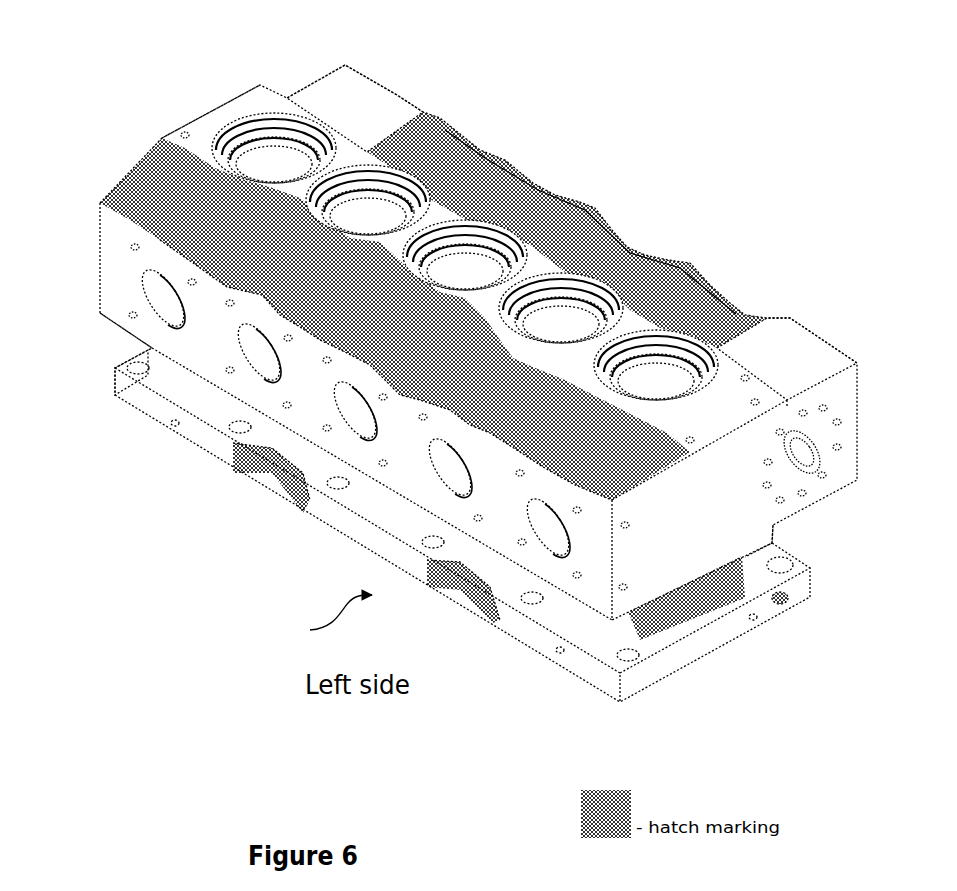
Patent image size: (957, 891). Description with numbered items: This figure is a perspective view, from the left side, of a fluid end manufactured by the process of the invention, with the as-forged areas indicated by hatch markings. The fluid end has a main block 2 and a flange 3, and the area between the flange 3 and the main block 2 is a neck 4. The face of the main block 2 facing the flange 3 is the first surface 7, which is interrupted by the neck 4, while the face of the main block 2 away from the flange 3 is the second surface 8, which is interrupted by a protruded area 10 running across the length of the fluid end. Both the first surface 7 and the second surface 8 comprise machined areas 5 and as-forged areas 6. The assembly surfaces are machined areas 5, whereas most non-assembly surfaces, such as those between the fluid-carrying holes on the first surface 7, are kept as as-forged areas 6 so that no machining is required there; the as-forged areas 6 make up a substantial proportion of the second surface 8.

The main block 2 is at (457, 380).
The flange 3 is at (357, 532).
The neck 4 is at (115, 349).
The machined areas or surfaces 5 is at (360, 97).
The as-forged areas or surfaces 6 is at (135, 185).
The first surface 7 is at (833, 500).
The second surface 8 is at (455, 128).
The protruded area 10 is at (232, 103).